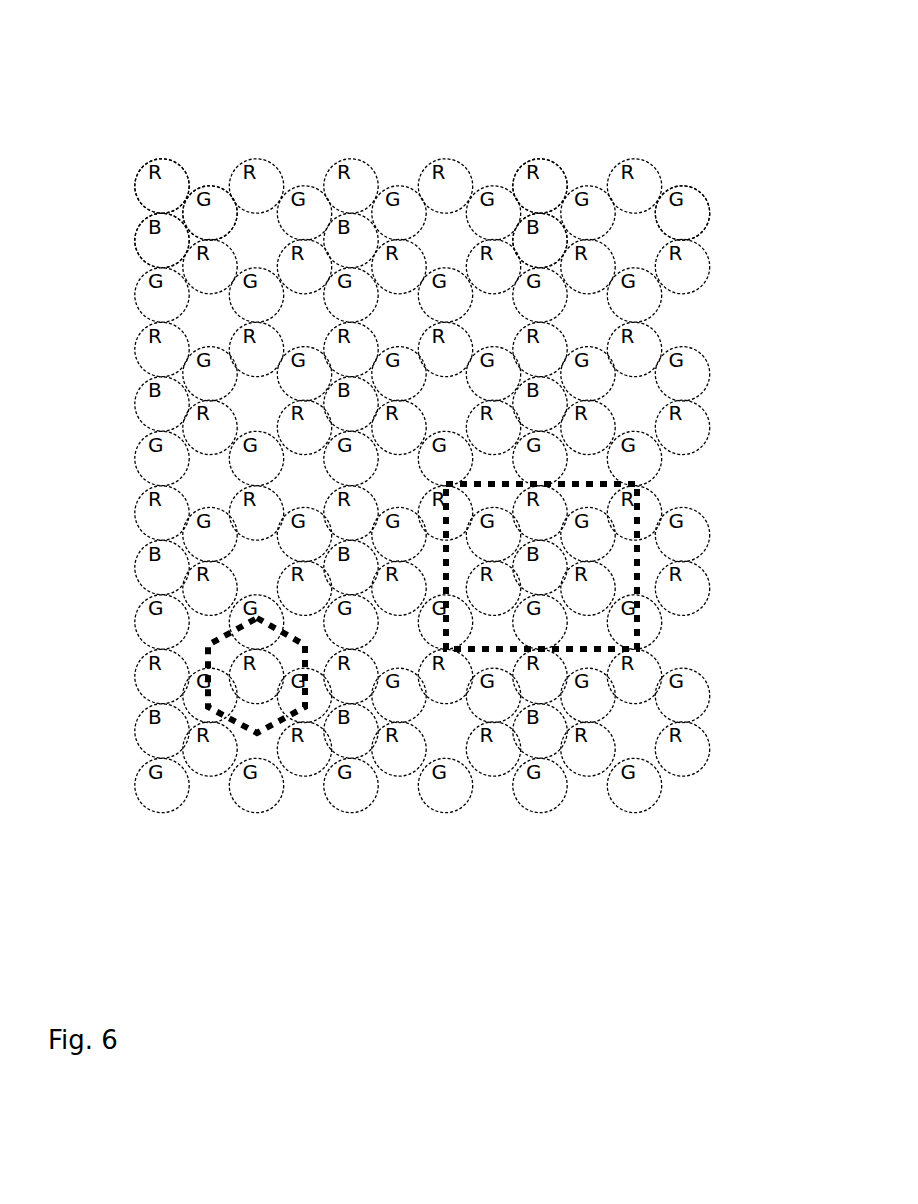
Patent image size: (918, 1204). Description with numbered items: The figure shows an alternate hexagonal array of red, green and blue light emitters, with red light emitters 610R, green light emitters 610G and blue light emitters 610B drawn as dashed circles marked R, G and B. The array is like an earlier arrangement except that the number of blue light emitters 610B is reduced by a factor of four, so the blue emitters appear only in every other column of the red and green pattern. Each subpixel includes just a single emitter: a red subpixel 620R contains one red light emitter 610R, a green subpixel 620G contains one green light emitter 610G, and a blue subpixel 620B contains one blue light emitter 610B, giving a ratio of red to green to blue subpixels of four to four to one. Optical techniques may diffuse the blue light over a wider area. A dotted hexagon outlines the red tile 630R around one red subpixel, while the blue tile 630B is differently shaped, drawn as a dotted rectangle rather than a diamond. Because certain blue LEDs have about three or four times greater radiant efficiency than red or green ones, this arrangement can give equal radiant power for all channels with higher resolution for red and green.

The red light emitter 610R is at (163, 158).
The green light emitter 610G is at (212, 186).
The blue light emitter 610B is at (138, 221).
The red subpixel 620R is at (541, 158).
The blue subpixel 620B is at (567, 200).
The green subpixel 620G is at (697, 190).
The red tile 630R is at (235, 722).
The blue tile 630B is at (487, 650).